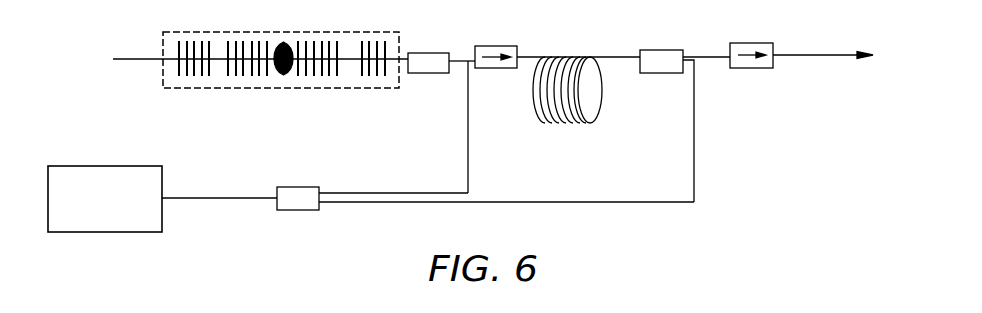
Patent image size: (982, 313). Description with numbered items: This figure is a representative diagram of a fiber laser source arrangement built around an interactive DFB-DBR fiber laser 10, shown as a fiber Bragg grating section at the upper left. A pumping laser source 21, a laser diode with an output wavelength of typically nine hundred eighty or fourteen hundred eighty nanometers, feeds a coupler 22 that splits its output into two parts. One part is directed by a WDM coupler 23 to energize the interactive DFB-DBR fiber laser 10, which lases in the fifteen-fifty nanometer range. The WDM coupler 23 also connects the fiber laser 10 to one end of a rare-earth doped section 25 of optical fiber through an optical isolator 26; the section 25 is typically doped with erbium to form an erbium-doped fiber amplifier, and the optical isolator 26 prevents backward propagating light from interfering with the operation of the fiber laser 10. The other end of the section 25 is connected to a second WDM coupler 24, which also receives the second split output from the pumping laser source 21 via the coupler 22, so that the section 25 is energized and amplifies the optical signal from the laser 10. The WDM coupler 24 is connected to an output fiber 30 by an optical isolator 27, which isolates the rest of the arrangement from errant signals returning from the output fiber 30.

The interactive DFB-DBR fiber laser 10 is at (352, 82).
The pumping laser source 21 is at (95, 225).
The coupler 22 is at (296, 206).
The WDM coupler 23 is at (432, 61).
The second WDM coupler 24 is at (653, 54).
The rare-earth doped section 25 is at (602, 108).
The optical isolator 26 is at (500, 46).
The optical isolator 27 is at (752, 44).
The output fiber 30 is at (827, 54).